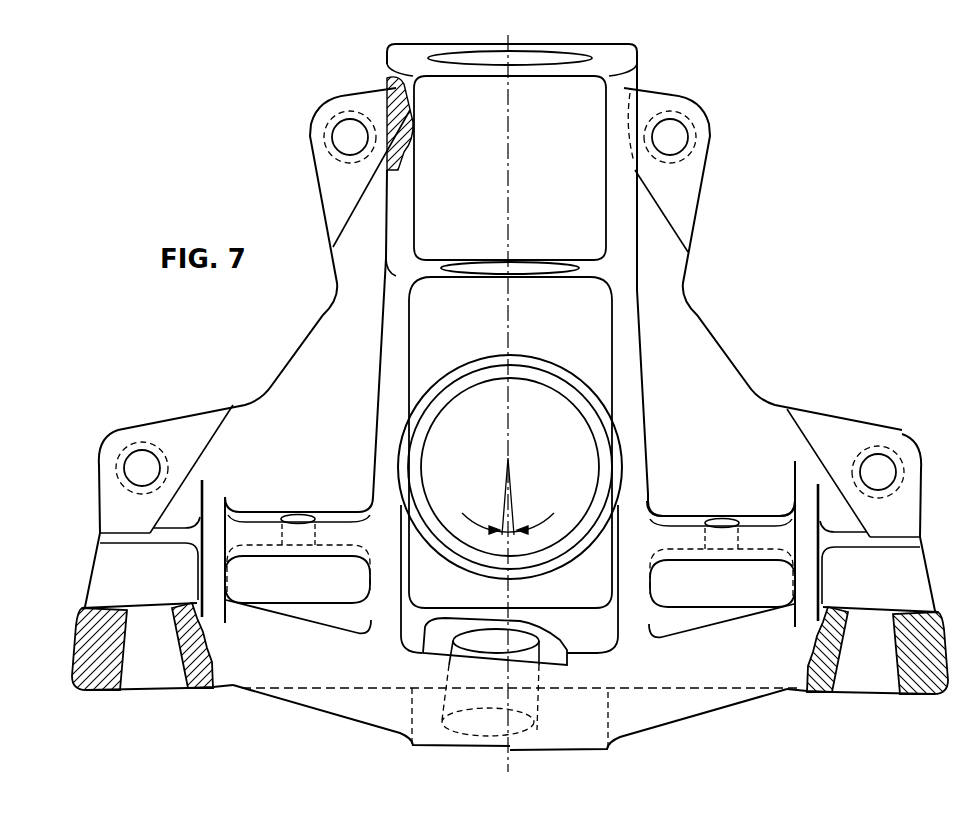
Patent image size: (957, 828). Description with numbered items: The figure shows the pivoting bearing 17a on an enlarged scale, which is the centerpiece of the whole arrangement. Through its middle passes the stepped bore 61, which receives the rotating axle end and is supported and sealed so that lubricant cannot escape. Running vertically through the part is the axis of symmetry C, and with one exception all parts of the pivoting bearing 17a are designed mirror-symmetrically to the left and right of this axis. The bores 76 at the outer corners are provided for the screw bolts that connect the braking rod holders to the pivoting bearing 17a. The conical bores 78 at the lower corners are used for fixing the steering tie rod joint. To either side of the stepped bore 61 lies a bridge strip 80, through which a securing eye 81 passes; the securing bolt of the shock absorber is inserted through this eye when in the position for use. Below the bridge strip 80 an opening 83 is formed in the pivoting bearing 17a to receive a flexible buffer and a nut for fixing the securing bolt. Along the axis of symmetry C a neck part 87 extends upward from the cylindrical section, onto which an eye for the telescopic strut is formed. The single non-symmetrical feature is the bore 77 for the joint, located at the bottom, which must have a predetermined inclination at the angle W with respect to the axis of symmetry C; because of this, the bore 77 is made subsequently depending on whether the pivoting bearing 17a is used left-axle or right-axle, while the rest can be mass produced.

The pivoting bearing 17a is at (690, 365).
The stepped bore 61 is at (583, 462).
The bores 76 is at (340, 128).
The bore 77 is at (523, 645).
The conical bores 78 is at (153, 670).
The bridge strip 80 is at (250, 533).
The securing eye 81 is at (298, 518).
The opening 83 is at (290, 592).
The neck part 87 is at (618, 240).
The axis of symmetry C is at (508, 315).
The angle w W is at (510, 518).